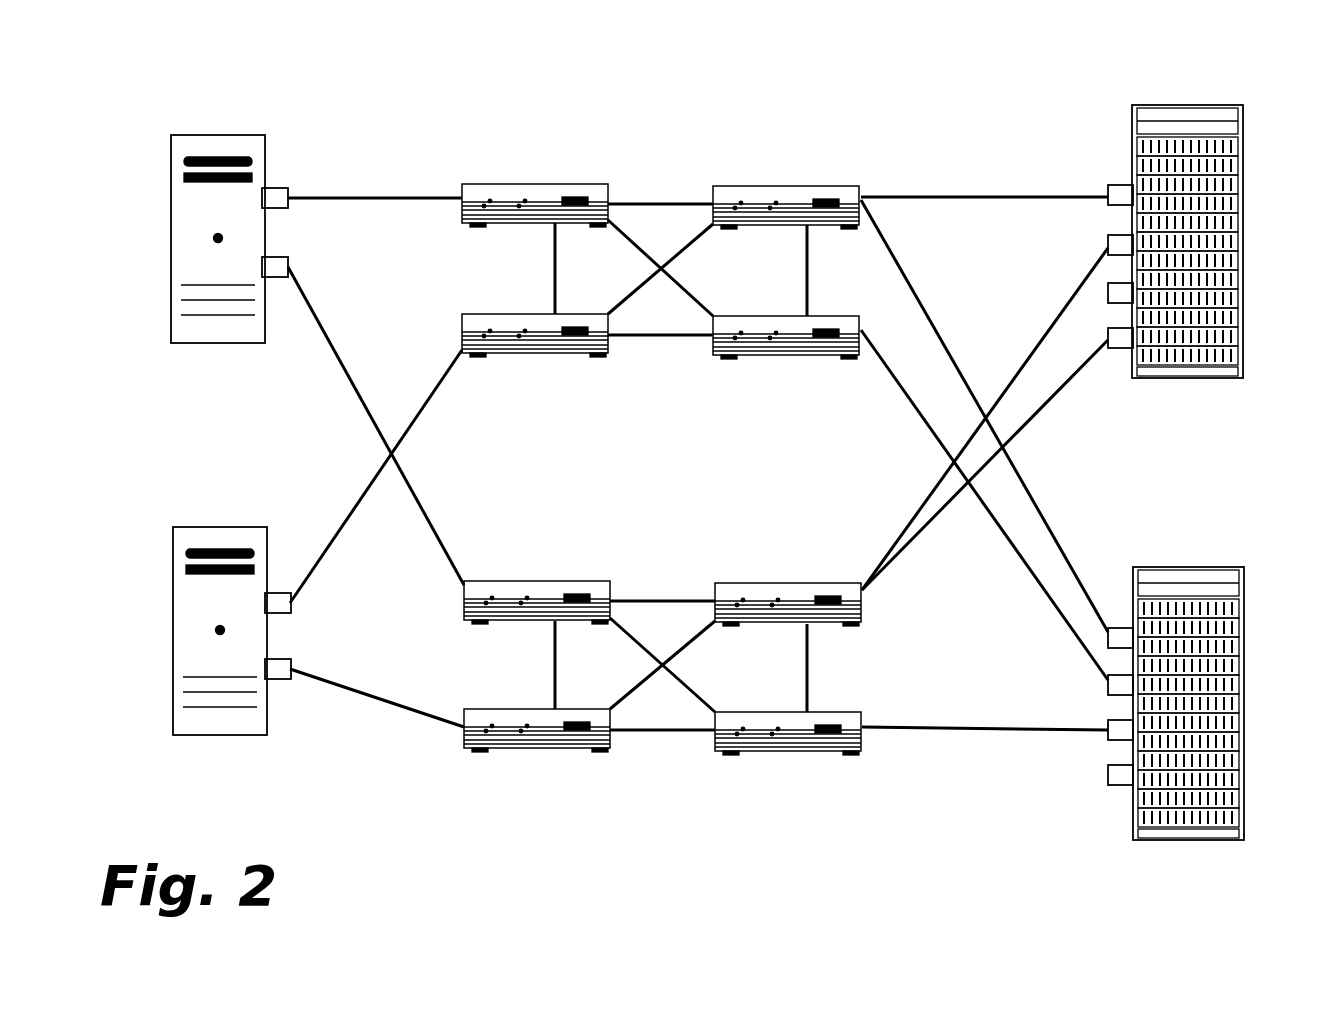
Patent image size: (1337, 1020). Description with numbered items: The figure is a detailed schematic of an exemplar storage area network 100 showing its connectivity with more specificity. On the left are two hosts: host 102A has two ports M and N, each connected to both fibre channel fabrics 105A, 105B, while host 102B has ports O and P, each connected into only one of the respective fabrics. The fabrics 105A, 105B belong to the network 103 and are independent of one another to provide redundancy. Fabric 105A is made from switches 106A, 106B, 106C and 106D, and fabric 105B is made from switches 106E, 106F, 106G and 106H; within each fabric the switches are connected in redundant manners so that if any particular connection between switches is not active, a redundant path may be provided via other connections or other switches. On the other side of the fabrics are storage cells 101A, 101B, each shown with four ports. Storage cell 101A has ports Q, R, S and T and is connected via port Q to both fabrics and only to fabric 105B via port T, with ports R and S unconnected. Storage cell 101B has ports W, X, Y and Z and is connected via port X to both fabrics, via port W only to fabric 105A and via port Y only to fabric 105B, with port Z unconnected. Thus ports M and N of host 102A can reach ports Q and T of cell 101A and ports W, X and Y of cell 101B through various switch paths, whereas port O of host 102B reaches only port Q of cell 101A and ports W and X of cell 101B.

The storage area network 100 is at (280, 52).
The storage cell 101A is at (1198, 380).
The storage cell 101B is at (1210, 845).
The host 102A is at (205, 136).
The host 102B is at (194, 527).
The network 103 is at (740, 132).
The fibre channel fabric 105A is at (657, 352).
The fibre channel fabric 105B is at (654, 573).
The switch 106A is at (490, 184).
The switch 106B is at (515, 314).
The switch 106C is at (803, 186).
The switch 106D is at (802, 316).
The switch 106E is at (488, 581).
The switch 106F is at (528, 709).
The switch 106G is at (792, 623).
The switch 106H is at (712, 752).